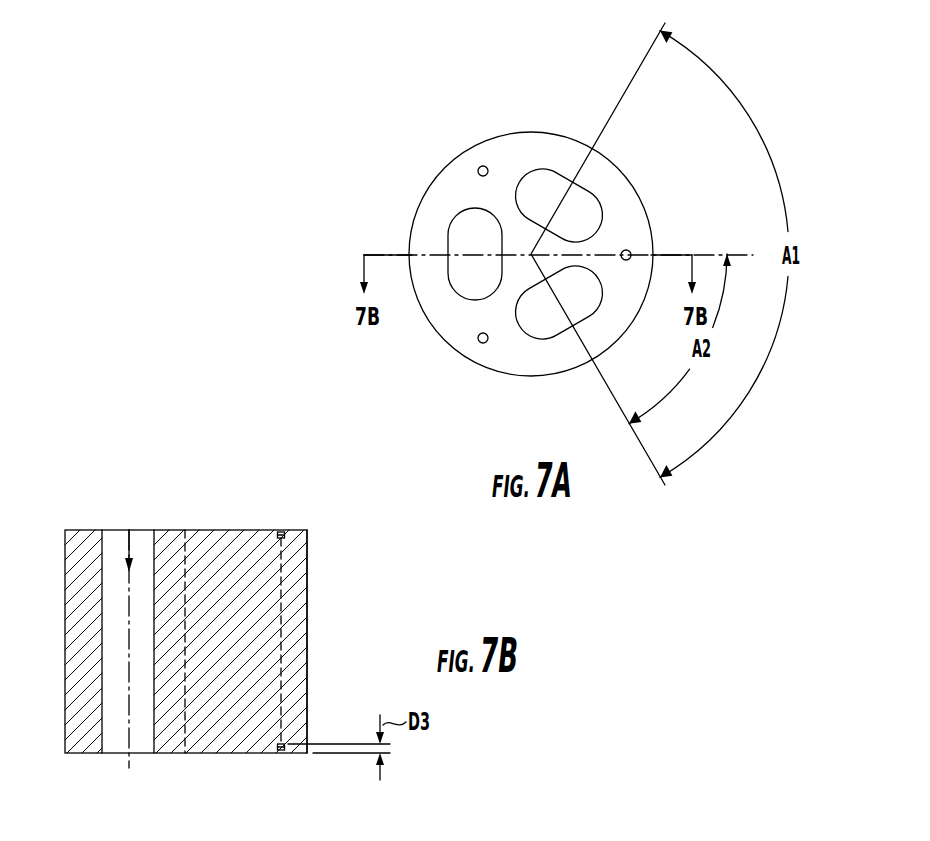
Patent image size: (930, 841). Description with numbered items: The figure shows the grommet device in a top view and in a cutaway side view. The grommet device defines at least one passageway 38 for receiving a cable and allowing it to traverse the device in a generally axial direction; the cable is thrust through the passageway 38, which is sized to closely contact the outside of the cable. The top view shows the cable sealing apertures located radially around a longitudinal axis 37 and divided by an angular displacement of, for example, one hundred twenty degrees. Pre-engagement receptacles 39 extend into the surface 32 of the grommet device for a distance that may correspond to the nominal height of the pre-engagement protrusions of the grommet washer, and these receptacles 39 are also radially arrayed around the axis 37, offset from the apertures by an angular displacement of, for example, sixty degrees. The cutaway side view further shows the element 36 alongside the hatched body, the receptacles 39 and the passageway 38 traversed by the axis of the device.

In FIG. 7A, the surface 32 is at (507, 352).
In FIG. 7B, the surface 32 is at (227, 530).
In FIG. 7B, the outer surface 36 is at (307, 636).
In FIG. 7B, the longitudinal axis 37 is at (185, 530).
In FIG. 7A, the passageway 38 is at (266, 0).
In FIG. 7B, the passageway 38 is at (129, 530).
In FIG. 7A, the pre-engagement receptacle 39 is at (483, 166).
In FIG. 7B, the pre-engagement receptacle 39 is at (282, 532).